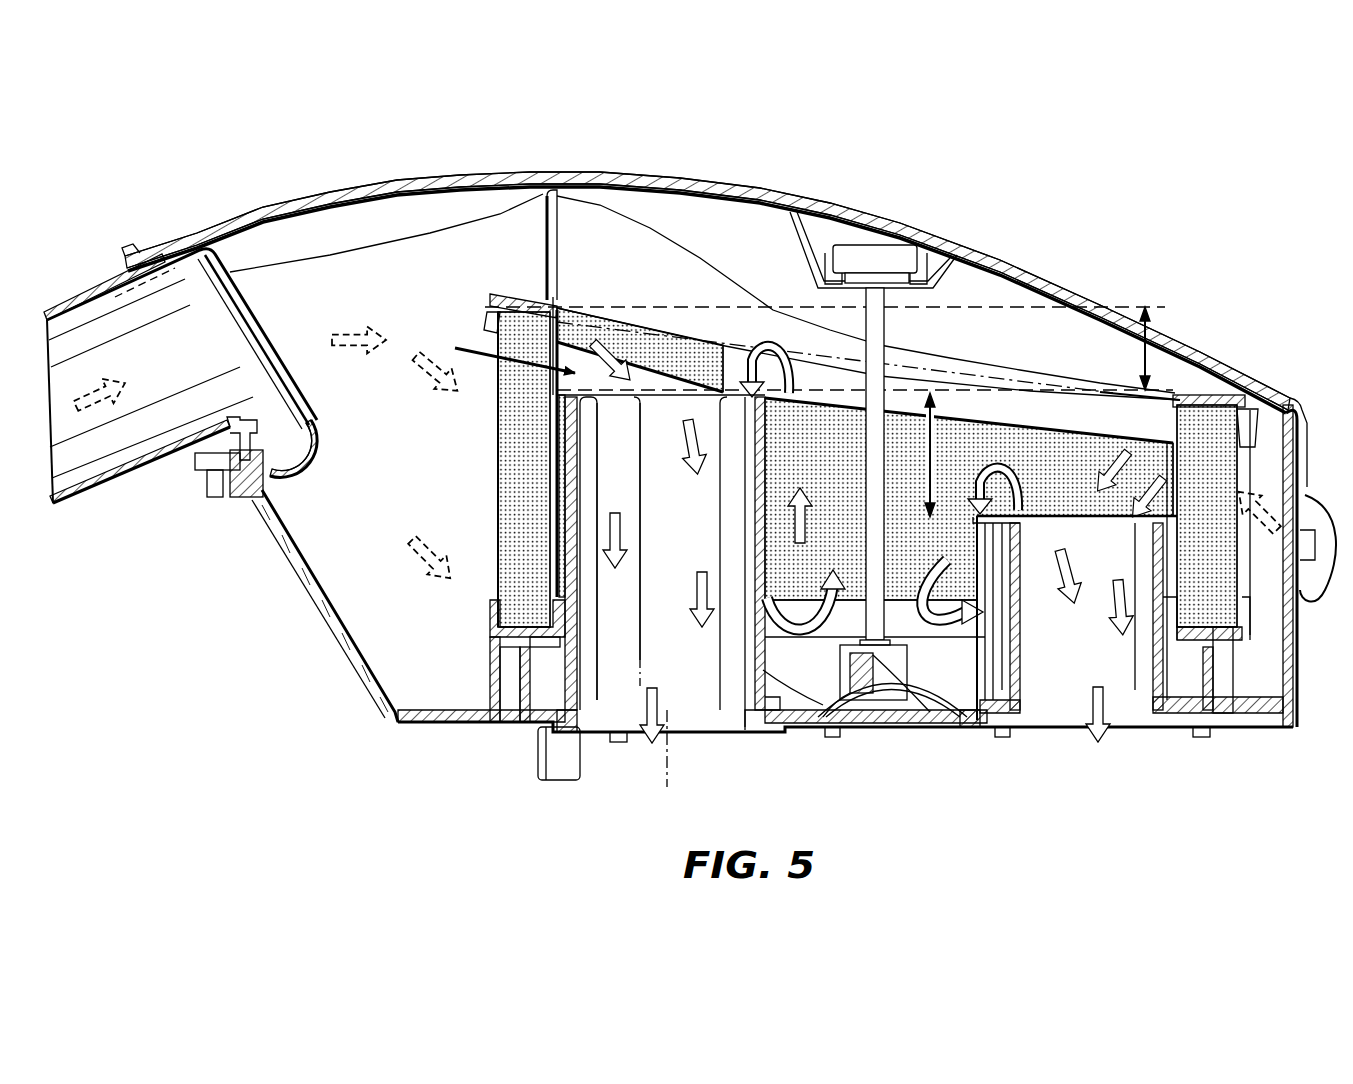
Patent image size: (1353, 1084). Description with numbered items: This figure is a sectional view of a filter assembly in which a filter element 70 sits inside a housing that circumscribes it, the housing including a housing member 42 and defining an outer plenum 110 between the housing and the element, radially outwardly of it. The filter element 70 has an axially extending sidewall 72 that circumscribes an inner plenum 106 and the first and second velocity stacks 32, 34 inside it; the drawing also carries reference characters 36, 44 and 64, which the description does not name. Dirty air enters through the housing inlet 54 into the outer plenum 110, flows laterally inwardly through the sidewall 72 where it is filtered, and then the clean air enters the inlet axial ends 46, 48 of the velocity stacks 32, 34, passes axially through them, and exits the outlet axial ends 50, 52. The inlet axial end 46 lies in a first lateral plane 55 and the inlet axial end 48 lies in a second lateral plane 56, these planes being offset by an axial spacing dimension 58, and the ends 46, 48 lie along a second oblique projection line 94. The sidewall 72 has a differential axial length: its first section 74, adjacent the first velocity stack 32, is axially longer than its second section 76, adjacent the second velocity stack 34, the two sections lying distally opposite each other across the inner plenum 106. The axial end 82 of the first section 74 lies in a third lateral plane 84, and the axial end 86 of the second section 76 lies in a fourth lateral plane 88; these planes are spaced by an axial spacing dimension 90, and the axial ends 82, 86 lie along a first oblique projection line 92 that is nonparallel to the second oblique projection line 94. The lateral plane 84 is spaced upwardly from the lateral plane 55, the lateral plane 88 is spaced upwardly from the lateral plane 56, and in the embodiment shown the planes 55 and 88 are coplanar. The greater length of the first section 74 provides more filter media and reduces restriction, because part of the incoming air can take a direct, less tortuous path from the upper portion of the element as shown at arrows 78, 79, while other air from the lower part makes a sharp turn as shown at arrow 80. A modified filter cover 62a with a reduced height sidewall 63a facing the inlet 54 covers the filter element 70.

The first velocity stack 32 is at (578, 588).
The second velocity stack 34 is at (1022, 657).
The cyclone axis 36 is at (670, 770).
The housing member 42 is at (1296, 403).
The latch 44 is at (1293, 728).
The inlet axial end of first velocity stack 46 is at (607, 398).
The inlet axial end of second velocity stack 48 is at (1022, 522).
The outlet axial end of first velocity stack 50 is at (597, 740).
The outlet axial end of second velocity stack 52 is at (1020, 724).
The housing inlet 54 is at (150, 450).
The first lateral plane 55 is at (830, 398).
The second lateral plane 56 is at (952, 518).
The axial spacing dimension 58 is at (925, 437).
The filter cover 62a is at (1032, 276).
The reduced height sidewall 63a is at (553, 258).
The motor 64 is at (880, 255).
The filter element 70 is at (494, 493).
The sidewall 72 is at (513, 535).
The first section 74 is at (497, 455).
The second section 76 is at (1215, 470).
The arrow 78 is at (492, 348).
The arrow 79 is at (612, 347).
The arrow 80 is at (760, 347).
The axial end of first section 82 is at (490, 303).
The third lateral plane 84 is at (1163, 305).
The axial end of second section 86 is at (1222, 398).
The fourth lateral plane 88 is at (1137, 398).
The axial spacing dimension 90 is at (1140, 360).
The first oblique projection line 92 is at (987, 377).
The second oblique projection line 94 is at (1087, 480).
The inner plenum 106 is at (862, 548).
The outer plenum 110 is at (448, 650).